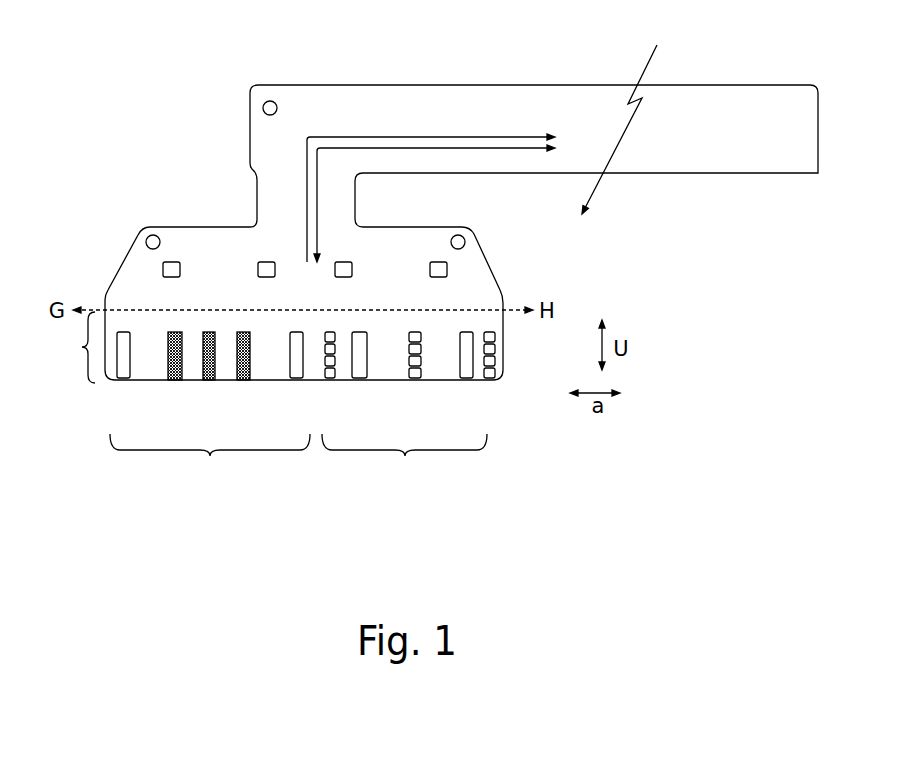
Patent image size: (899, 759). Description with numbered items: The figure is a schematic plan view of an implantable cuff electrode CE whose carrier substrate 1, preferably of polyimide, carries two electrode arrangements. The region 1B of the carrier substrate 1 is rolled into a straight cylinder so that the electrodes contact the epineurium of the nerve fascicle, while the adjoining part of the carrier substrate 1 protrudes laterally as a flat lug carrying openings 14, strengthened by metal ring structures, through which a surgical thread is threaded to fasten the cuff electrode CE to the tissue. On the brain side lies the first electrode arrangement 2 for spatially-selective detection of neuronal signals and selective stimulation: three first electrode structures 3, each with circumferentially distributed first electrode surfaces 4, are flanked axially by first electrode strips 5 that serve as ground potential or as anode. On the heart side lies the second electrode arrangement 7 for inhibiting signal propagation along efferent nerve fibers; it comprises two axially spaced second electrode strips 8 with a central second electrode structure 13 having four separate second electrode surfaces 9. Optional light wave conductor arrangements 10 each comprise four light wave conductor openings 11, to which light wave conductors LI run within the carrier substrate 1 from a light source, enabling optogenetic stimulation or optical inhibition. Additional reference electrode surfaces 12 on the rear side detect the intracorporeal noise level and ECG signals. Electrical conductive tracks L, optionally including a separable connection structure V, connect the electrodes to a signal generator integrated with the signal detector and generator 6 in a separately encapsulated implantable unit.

The carrier substrate 1 is at (268, 165).
The carrier substrate region 1B is at (69, 347).
The first electrode arrangement 2 is at (210, 458).
The first electrode structure 3 is at (173, 386).
The first electrode surfaces 4 is at (243, 330).
The first electrode strips 5 is at (120, 386).
The signal detector and generator 6 is at (762, 132).
The second electrode arrangement 7 is at (404, 458).
The second electrode strips 8 is at (357, 386).
The second electrode surfaces 9 is at (414, 330).
The light wave conductor arrangement 10 is at (328, 327).
The light wave conductor openings 11 is at (496, 346).
The reference electrode surfaces 12 is at (178, 263).
The second electrode structure 13 is at (413, 386).
The openings 14 is at (263, 103).
The cuff electrode CE is at (178, 110).
The electrical conductive tracks L is at (400, 137).
The light wave conductors LI is at (487, 148).
The separable connection structure V is at (619, 139).